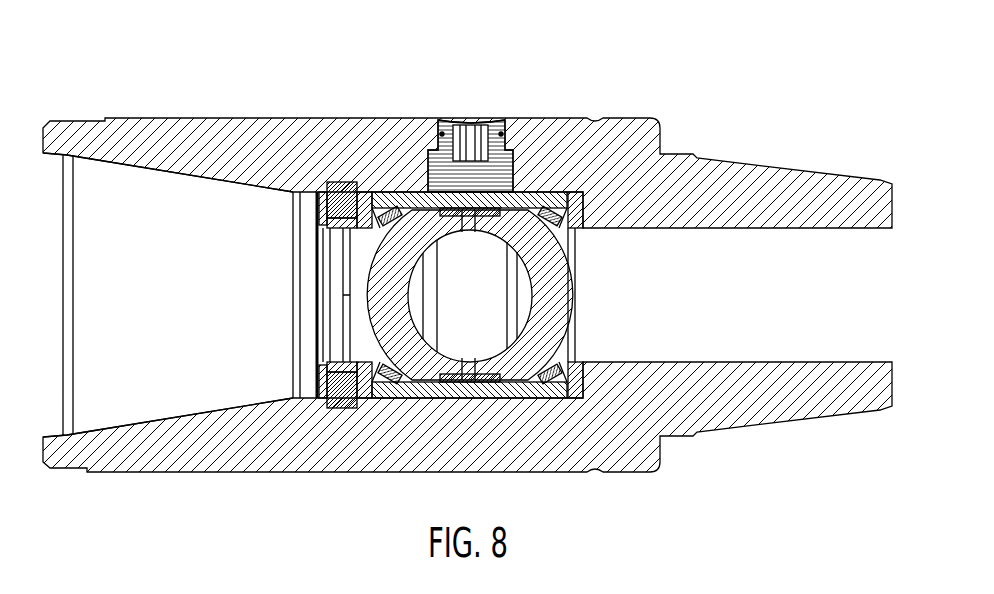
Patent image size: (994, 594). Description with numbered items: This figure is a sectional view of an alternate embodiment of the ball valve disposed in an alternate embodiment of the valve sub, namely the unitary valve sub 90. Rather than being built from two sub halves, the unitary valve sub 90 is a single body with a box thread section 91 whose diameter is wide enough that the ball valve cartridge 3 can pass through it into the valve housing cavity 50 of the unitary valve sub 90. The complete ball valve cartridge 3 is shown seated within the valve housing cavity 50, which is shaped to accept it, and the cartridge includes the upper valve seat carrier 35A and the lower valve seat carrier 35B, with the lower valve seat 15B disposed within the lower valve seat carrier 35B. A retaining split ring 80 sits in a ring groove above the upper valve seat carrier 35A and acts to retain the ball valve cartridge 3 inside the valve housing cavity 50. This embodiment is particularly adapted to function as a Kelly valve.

The unitary valve sub 90 is at (537, 106).
The box thread section 91 is at (207, 298).
The retaining split ring 80 is at (349, 181).
The upper valve seat carrier 35A is at (361, 399).
The lower valve seat carrier 35B is at (585, 201).
The valve housing cavity 50 is at (515, 295).
The lower valve seat 15B is at (563, 200).
The ball valve cartridge 3 is at (560, 406).